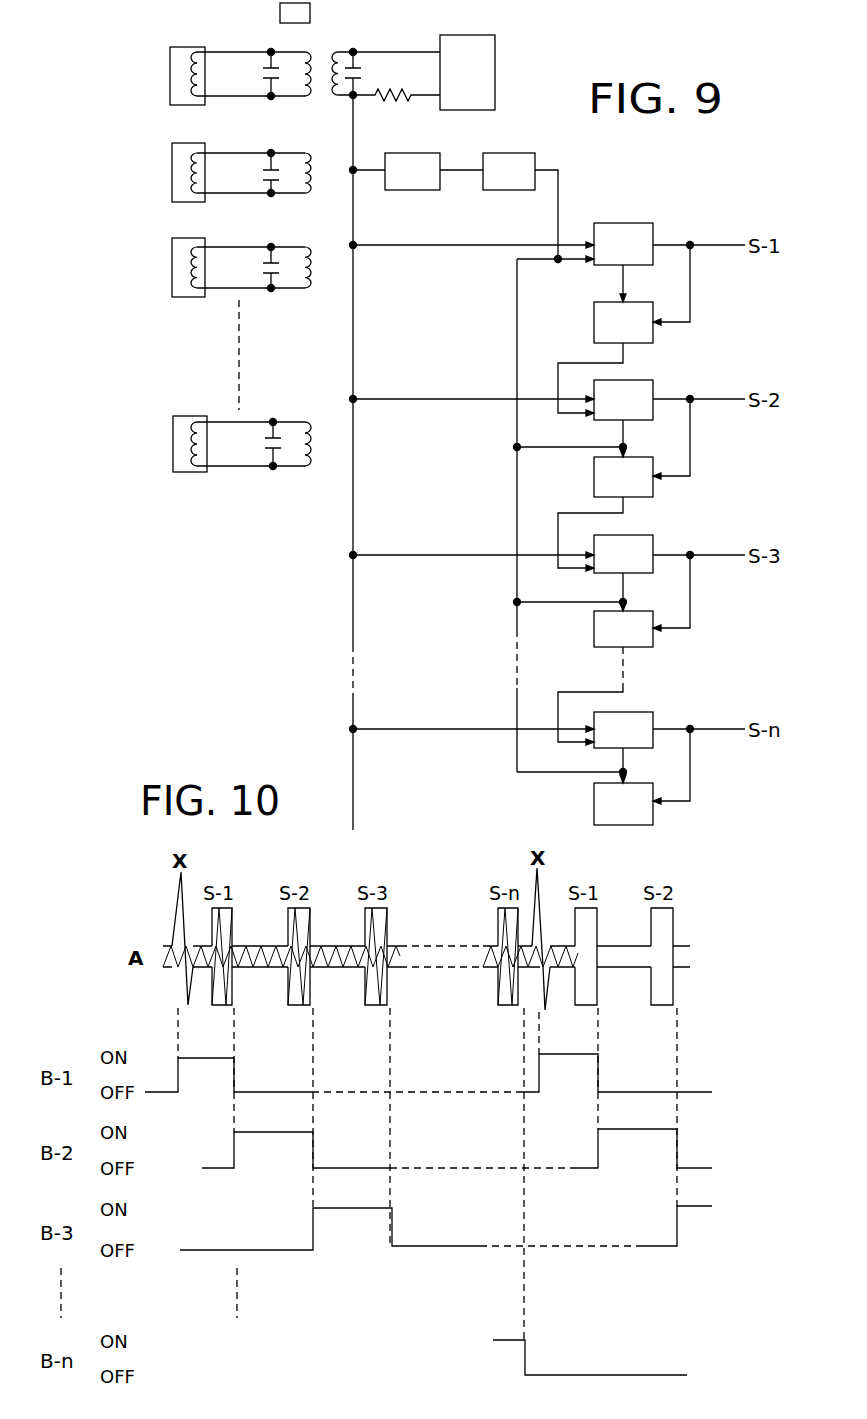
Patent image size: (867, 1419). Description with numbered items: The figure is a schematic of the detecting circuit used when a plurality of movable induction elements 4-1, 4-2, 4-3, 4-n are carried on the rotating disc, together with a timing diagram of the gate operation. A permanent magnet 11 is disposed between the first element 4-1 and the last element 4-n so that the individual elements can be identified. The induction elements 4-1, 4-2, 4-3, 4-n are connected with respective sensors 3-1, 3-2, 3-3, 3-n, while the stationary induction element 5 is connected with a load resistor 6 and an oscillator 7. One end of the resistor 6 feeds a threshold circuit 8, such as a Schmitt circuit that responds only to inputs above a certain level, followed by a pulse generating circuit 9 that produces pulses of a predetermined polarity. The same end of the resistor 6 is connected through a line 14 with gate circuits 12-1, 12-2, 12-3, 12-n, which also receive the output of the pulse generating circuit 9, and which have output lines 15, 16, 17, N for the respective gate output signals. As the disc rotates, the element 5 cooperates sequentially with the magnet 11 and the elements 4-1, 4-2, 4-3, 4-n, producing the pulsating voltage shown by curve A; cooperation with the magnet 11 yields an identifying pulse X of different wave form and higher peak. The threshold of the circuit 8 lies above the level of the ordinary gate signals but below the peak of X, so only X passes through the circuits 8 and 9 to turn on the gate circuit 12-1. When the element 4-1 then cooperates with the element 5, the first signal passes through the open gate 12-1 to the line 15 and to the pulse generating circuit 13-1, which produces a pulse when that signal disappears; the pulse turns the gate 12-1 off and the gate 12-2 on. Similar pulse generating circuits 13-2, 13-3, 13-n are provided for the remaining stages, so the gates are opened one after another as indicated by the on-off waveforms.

The permanent magnet 11 is at (280, 15).
The sensor 3-1 is at (191, 73).
The sensor 3-2 is at (191, 174).
The sensor 3-3 is at (191, 269).
The sensor 3-n is at (191, 443).
The induction element 4-1 is at (304, 98).
The induction element 4-2 is at (304, 195).
The induction element 4-3 is at (304, 290).
The induction element 4-n is at (304, 468).
The induction element 5 is at (335, 52).
The load resistor 6 is at (403, 99).
The oscillator 7 is at (467, 72).
The threshold circuit 8 is at (412, 171).
The pulse generating circuit 9 is at (509, 171).
The line 14 is at (353, 345).
The gate circuit 12-1 is at (623, 244).
The gate circuit 12-2 is at (623, 400).
The gate circuit 12-3 is at (623, 554).
The gate circuit 12-n is at (623, 730).
The pulse generating circuit 13-1 is at (623, 322).
The pulse generating circuit 13-2 is at (623, 477).
The pulse generating circuit 13-3 is at (623, 629).
The pulse generating circuit 13-n is at (623, 804).
The output line 15 is at (699, 272).
The output line 16 is at (699, 426).
The output line 17 is at (699, 580).
The output line N is at (699, 752).